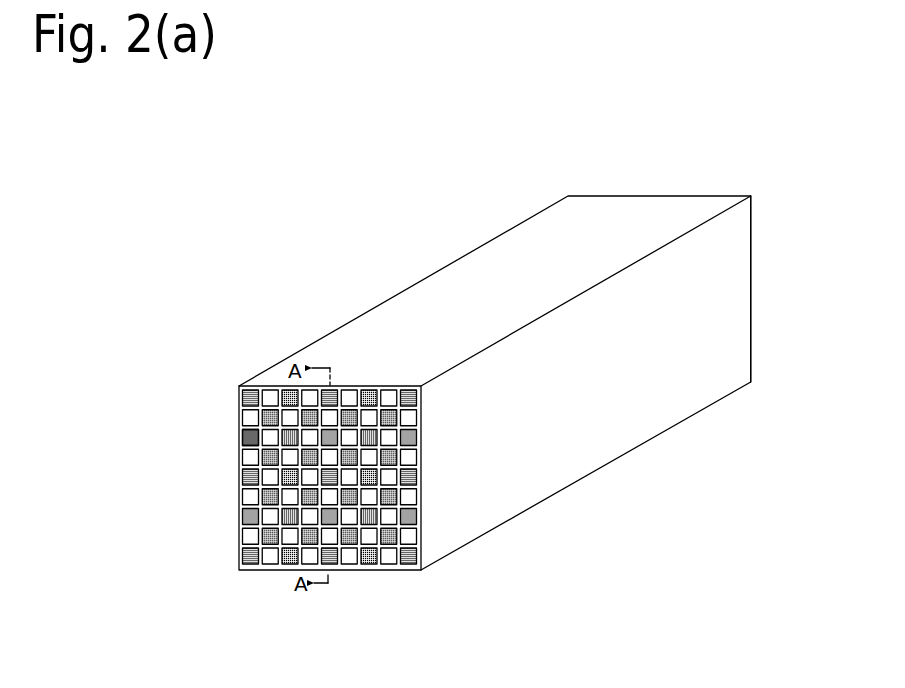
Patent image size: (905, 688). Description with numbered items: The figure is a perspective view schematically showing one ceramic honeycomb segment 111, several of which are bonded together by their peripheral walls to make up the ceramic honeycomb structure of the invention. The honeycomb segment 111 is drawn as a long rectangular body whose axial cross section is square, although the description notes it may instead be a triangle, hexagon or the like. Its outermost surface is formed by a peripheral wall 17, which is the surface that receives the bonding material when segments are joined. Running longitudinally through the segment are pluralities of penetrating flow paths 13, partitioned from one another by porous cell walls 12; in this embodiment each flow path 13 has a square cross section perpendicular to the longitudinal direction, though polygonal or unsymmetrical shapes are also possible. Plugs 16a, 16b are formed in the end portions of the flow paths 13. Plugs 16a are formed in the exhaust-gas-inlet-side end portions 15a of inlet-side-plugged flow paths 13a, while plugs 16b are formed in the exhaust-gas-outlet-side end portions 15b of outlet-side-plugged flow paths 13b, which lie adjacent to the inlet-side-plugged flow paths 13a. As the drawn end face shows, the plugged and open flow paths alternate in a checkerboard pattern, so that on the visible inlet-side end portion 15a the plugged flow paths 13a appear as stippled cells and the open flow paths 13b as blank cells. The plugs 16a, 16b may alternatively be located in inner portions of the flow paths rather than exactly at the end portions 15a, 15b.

The honeycomb segment 111 is at (485, 434).
The peripheral wall 17 is at (477, 277).
The exhaust-gas-outlet-side end portion 15b is at (751, 213).
The exhaust-gas-inlet-side end portion 15a is at (292, 534).
The plug 16a is at (250, 442).
The plug 16b is at (208, 453).
The porous cell wall 12 is at (291, 524).
The flow path 13 is at (377, 615).
The inlet-side-plugged flow path 13a is at (368, 558).
The outlet-side-plugged flow path 13b is at (350, 558).